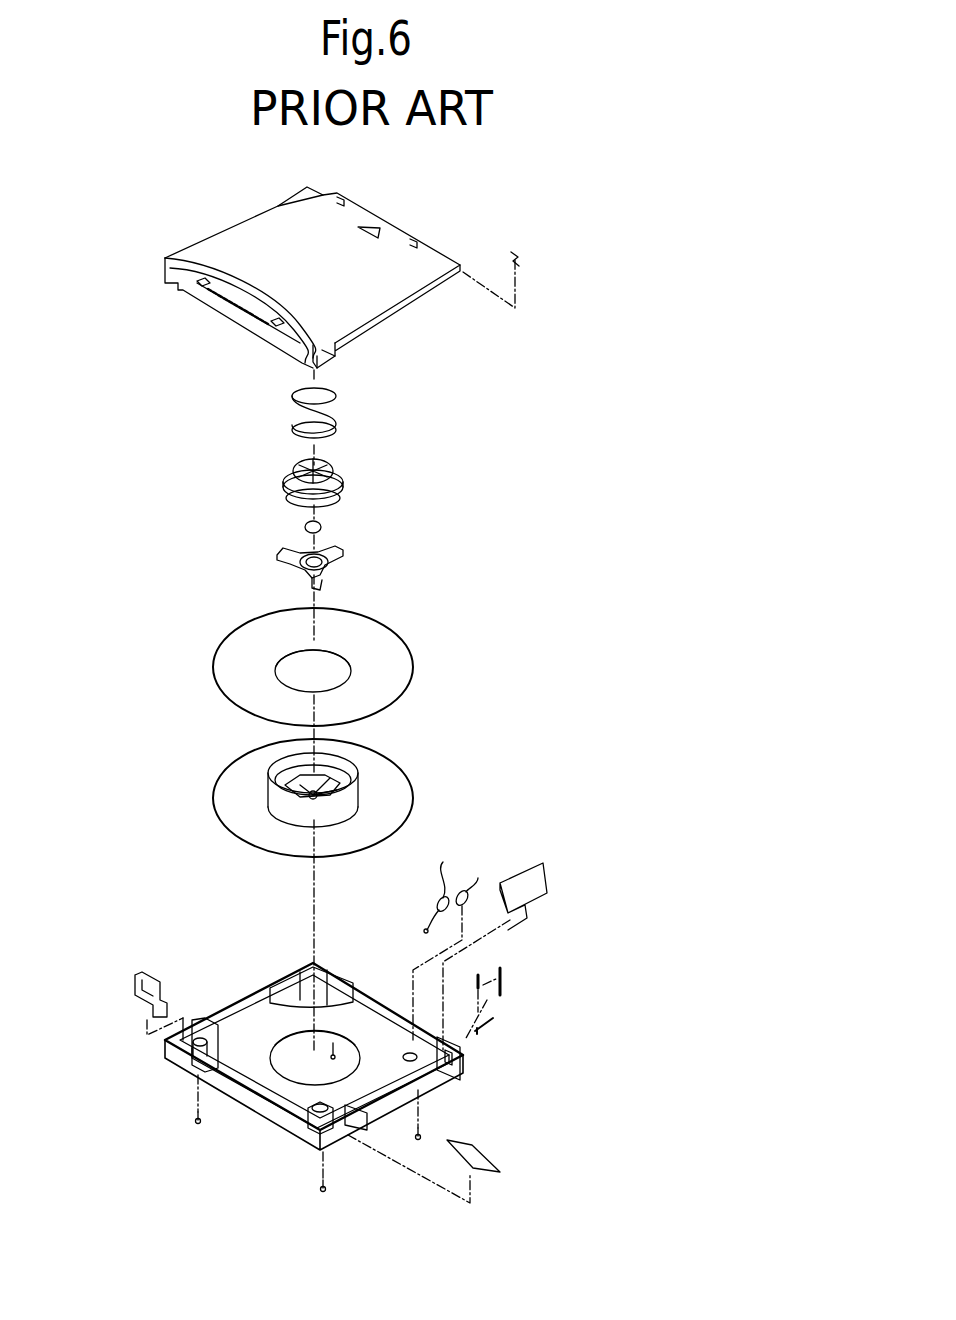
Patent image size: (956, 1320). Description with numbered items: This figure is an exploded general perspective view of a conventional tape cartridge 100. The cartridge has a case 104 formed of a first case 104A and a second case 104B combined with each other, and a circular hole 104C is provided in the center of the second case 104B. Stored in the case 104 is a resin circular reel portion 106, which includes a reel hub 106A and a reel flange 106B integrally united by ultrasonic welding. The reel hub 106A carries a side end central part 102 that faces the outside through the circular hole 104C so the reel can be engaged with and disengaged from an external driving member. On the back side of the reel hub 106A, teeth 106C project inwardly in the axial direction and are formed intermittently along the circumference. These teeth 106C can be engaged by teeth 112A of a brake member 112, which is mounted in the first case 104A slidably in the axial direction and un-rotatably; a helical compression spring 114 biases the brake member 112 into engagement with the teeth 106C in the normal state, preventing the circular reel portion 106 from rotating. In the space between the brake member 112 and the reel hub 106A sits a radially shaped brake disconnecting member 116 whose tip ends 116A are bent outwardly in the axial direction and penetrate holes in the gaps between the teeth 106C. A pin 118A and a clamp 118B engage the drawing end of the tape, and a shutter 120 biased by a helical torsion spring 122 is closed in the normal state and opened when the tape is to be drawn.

The tape cartridge 100 is at (423, 184).
The side end central part 102 is at (298, 838).
The case 104 is at (176, 1283).
The first case 104A is at (433, 262).
The second case 104B is at (282, 1120).
The circular hole 104C is at (276, 1050).
The circular reel portion 106 is at (490, 608).
The reel hub 106A is at (388, 782).
The reel flange 106B is at (393, 650).
The teeth 106C is at (297, 780).
The brake member 112 is at (338, 482).
The teeth 112A is at (290, 507).
The helical compression spring 114 is at (332, 414).
The brake disconnecting member 116 is at (340, 552).
The tip ends 116A is at (330, 600).
The pin 118A is at (482, 975).
The clamp 118B is at (502, 973).
The shutter 120 is at (540, 870).
The helical torsion spring 122 is at (446, 935).